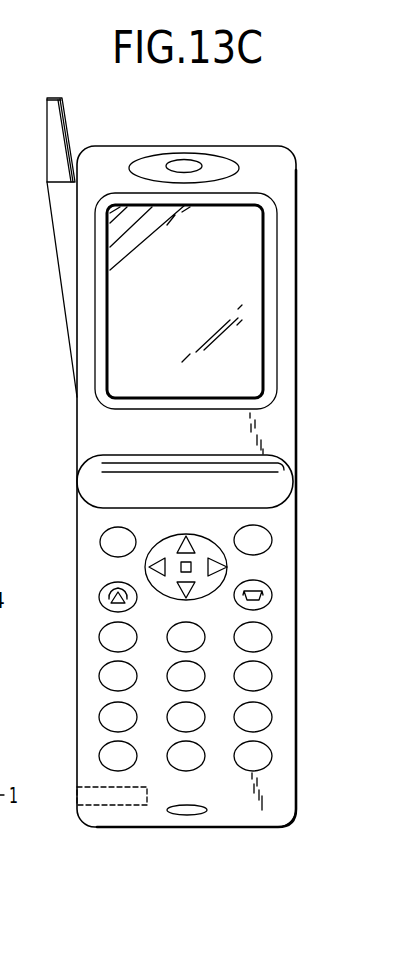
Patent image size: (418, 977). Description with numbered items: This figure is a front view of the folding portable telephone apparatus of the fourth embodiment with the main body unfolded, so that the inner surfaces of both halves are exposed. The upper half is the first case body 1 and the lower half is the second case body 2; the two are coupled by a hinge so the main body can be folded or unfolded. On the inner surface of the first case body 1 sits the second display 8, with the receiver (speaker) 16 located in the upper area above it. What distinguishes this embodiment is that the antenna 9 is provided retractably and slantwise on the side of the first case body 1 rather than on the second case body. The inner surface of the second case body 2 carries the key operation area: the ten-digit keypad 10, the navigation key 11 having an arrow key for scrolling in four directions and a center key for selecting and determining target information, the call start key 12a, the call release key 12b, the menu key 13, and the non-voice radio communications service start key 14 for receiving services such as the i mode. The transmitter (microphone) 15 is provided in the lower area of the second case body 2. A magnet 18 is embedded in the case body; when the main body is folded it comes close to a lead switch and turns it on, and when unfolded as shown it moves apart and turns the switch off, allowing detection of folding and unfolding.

The first case body 1 is at (283, 342).
The second case body 2 is at (287, 789).
The second display 8 is at (245, 248).
The antenna 9 is at (66, 110).
The ten-digit keypad 10 is at (271, 670).
The navigation key 11 is at (203, 545).
The call start key 12a is at (103, 603).
The call release key 12b is at (264, 585).
The menu key 13 is at (271, 541).
The non-voice radio communications service start key 14 is at (100, 542).
The transmitter (microphone) 15 is at (190, 815).
The receiver (speaker) 16 is at (196, 167).
The magnet 18 is at (98, 808).